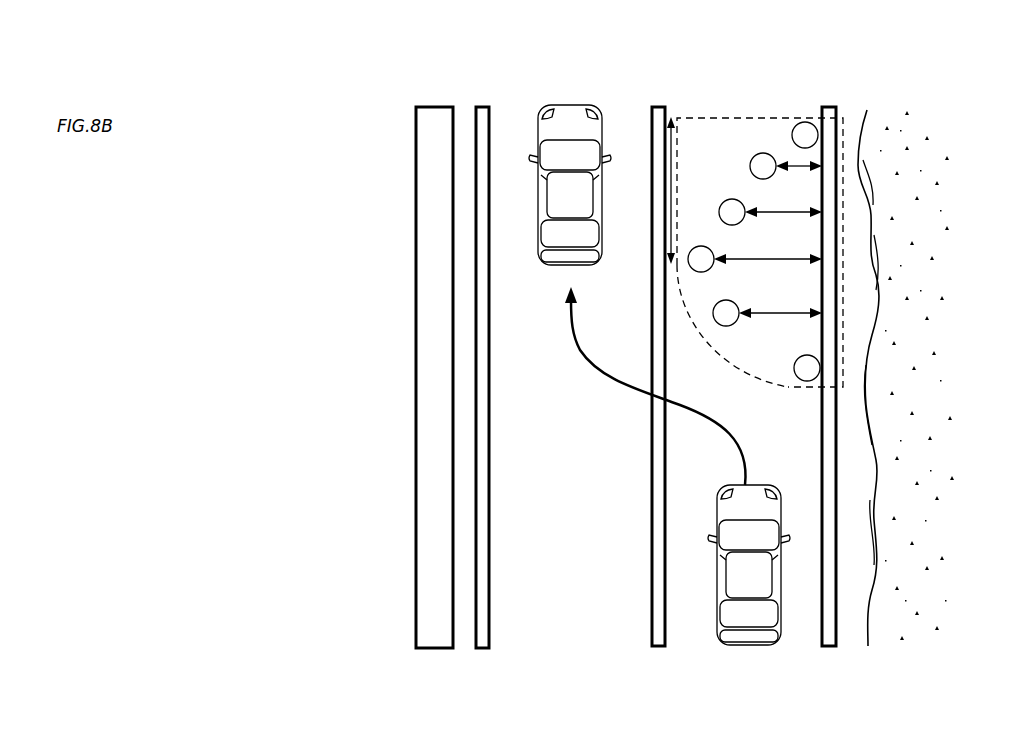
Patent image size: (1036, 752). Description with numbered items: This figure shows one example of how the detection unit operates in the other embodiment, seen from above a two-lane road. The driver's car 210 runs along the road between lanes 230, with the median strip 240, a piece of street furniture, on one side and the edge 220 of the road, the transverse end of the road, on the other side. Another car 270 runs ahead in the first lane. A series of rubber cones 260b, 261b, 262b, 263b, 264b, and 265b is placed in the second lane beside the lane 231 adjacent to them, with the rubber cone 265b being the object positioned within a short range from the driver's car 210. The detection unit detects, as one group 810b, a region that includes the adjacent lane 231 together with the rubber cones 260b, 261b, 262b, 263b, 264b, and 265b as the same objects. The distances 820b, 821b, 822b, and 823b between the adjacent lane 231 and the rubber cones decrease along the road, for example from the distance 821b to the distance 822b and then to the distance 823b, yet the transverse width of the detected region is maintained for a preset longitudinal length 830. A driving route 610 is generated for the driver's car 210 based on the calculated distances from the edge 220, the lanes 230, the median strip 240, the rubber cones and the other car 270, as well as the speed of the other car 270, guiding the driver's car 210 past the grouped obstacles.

The driver's car 210 is at (740, 648).
The edge of the road 220 is at (873, 432).
The lanes 230 is at (481, 649).
The lane 231 is at (830, 647).
The median strip 240 is at (416, 176).
The rubber cone 260b is at (804, 122).
The rubber cone 261b is at (763, 153).
The rubber cone 262b is at (732, 199).
The rubber cone 263b is at (692, 248).
The rubber cone 264b is at (726, 326).
The rubber cone 265b is at (820, 367).
The other car 270 is at (563, 105).
The driving route 610 is at (565, 327).
The group 810b is at (843, 137).
The distance 820b is at (794, 313).
The distance 821b is at (794, 259).
The distance 822b is at (794, 212).
The distance 823b is at (794, 166).
The preset longitudinal length 830 is at (690, 150).